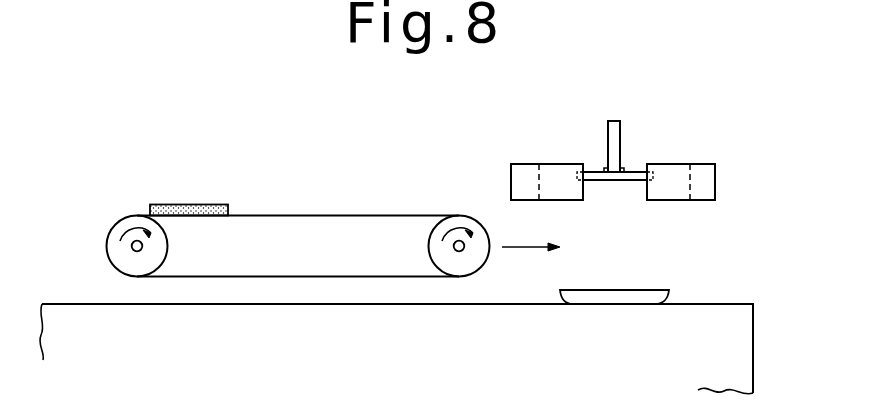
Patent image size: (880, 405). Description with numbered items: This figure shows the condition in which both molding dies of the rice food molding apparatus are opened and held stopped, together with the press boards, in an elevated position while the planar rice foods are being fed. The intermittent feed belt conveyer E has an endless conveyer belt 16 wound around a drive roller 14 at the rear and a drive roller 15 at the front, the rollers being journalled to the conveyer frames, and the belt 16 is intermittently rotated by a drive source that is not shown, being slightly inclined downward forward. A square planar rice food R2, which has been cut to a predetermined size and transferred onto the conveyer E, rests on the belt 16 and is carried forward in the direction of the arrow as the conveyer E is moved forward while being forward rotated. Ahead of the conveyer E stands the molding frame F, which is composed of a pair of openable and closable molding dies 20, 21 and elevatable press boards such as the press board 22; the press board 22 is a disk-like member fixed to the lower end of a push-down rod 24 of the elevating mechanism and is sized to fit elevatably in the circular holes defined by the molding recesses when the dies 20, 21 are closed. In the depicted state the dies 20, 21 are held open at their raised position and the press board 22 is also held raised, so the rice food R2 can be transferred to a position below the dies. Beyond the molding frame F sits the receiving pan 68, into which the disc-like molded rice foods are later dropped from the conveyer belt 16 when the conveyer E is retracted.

The drive roller 14 is at (135, 259).
The drive roller 15 is at (458, 263).
The endless conveyer belt 16 is at (403, 213).
The planar rice food R2 is at (199, 208).
The intermittent feed belt conveyer E is at (325, 214).
The molding frame F is at (630, 129).
The molding die 20 is at (702, 164).
The molding die 21 is at (520, 166).
The press board 22 is at (600, 172).
The push-down rod 24 is at (618, 121).
The receiving pan 68 is at (648, 288).